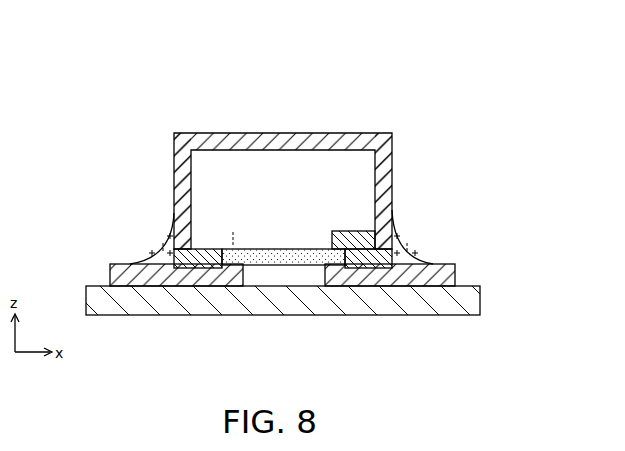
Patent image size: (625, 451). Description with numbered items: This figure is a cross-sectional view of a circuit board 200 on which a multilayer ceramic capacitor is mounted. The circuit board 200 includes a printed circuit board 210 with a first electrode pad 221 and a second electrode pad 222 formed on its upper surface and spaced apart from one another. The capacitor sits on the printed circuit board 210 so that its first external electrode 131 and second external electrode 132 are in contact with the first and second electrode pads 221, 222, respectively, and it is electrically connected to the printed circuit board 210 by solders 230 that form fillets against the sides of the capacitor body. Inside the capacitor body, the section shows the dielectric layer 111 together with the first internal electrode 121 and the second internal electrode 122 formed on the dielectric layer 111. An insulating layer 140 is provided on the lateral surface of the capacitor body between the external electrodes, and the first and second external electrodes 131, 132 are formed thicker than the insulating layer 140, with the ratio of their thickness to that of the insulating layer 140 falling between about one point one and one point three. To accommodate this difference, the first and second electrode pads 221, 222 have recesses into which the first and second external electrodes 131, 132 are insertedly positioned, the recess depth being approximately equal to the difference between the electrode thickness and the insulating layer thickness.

The circuit board 200 is at (298, 41).
The dielectric layer 111 is at (333, 137).
The first internal electrode 121 is at (365, 183).
The second internal electrode 122 is at (213, 232).
The first external electrode 131 is at (198, 266).
The second external electrode 132 is at (373, 266).
The insulating layer 140 is at (287, 260).
The printed circuit board 210 is at (323, 295).
The first electrode pad 221 is at (113, 276).
The second electrode pad 222 is at (452, 275).
The solders 230 is at (162, 246).